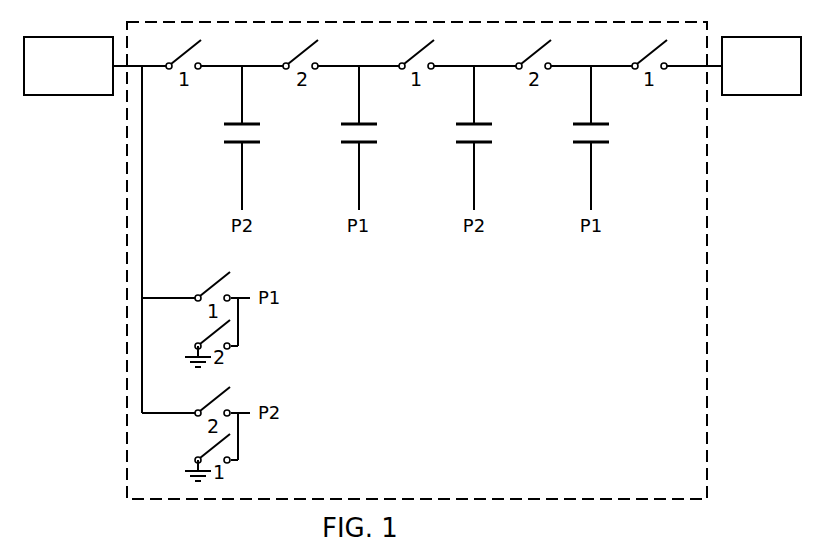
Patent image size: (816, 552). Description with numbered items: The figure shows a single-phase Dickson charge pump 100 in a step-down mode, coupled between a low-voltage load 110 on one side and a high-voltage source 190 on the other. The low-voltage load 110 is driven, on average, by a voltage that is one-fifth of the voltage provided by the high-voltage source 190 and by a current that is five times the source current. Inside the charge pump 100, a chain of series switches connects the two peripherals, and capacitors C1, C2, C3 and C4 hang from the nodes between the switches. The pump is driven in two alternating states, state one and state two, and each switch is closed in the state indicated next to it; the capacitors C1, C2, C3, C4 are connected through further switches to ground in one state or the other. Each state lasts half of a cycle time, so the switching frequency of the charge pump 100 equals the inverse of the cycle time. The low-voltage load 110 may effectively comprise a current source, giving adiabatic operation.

The single-phase Dickson charge pump 100 is at (489, 401).
The low-voltage load 110 is at (84, 76).
The high-voltage source 190 is at (777, 76).
The first capacitor C1 is at (249, 138).
The second capacitor C2 is at (366, 138).
The third capacitor C3 is at (481, 138).
The fourth capacitor C4 is at (598, 138).